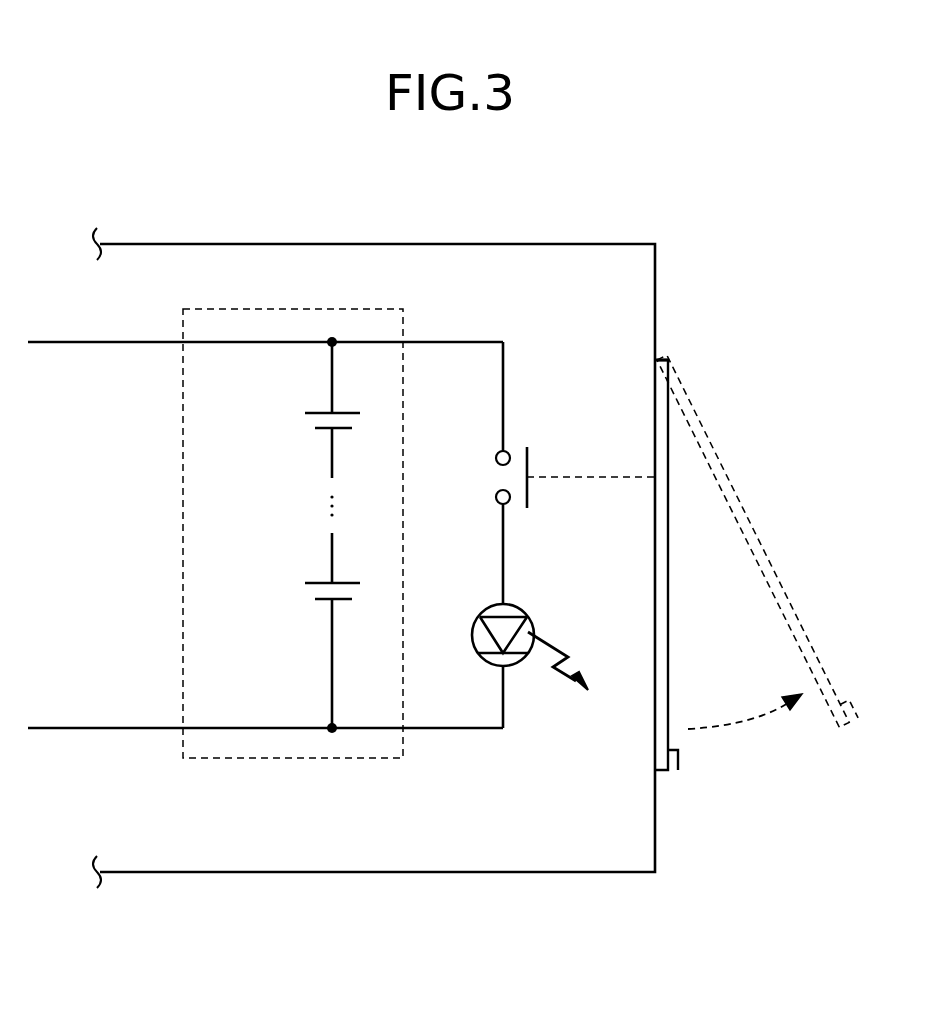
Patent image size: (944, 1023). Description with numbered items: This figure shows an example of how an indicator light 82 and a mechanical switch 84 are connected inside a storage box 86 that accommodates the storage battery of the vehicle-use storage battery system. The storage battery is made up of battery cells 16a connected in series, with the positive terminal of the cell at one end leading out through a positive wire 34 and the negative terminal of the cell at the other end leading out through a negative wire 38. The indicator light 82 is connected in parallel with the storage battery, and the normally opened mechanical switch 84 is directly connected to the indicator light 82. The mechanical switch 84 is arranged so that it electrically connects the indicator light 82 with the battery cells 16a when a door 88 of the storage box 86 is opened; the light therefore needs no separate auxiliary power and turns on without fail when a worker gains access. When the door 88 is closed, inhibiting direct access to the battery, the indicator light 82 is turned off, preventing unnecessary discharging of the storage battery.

The battery cell 16a is at (307, 414).
The positive wire 34 is at (87, 344).
The negative wire 38 is at (94, 727).
The indicator light 82 is at (526, 614).
The mechanical switch 84 is at (528, 462).
The storage box 86 is at (432, 244).
The door 88 is at (661, 625).